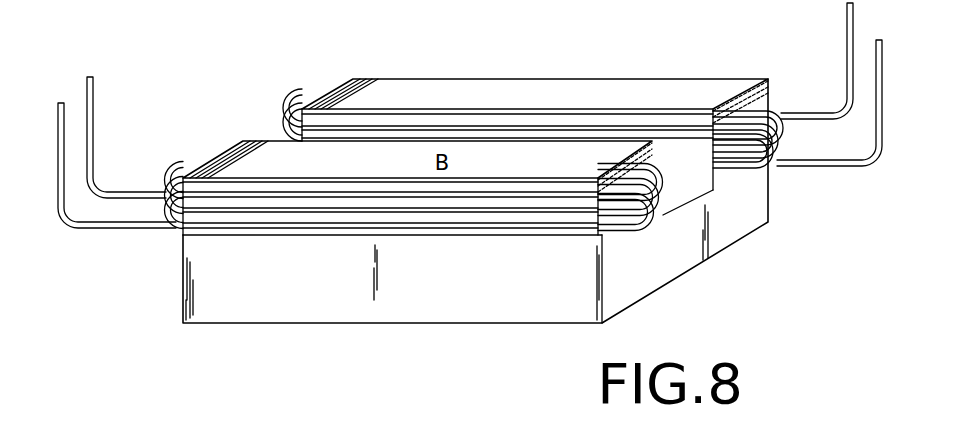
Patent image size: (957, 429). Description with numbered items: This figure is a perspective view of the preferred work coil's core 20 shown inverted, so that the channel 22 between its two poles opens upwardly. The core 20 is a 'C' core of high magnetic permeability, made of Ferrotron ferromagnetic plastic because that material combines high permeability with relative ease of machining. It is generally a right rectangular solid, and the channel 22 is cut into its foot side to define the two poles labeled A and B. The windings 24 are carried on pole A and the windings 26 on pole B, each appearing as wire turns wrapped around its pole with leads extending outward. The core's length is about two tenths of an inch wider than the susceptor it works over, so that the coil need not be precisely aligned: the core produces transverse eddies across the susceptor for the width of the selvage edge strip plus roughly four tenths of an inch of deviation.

The core 20 is at (727, 250).
The channel 22 is at (686, 123).
The windings 24 is at (856, 168).
The windings 26 is at (143, 230).